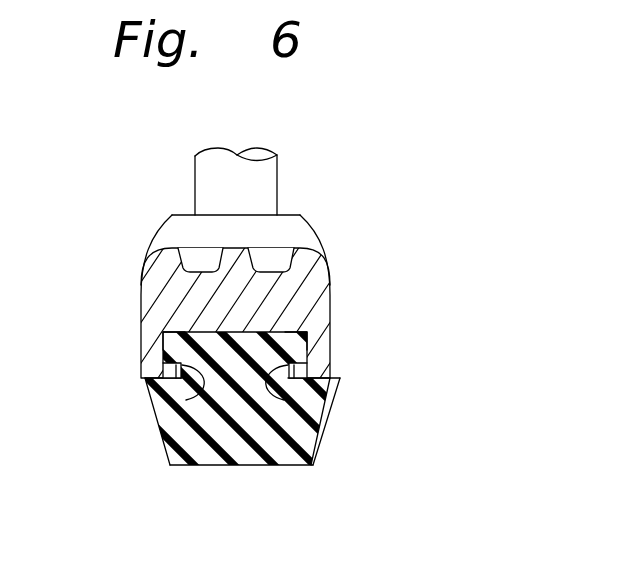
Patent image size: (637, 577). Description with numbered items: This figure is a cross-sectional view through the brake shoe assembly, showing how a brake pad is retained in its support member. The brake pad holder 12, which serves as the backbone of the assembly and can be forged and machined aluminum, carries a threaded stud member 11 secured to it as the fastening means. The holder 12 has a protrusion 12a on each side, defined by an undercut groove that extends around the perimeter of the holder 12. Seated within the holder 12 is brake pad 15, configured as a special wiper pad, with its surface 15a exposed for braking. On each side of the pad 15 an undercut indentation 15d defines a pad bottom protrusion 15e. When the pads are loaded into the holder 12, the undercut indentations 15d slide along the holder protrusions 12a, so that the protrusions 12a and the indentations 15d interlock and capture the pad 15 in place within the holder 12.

The threaded stud member 11 is at (273, 175).
The brake pad holder 12 is at (310, 235).
The protrusion 12a is at (163, 376).
The brake pad 15 is at (225, 432).
The surface 15a is at (250, 465).
The undercut indentation 15d is at (185, 404).
The pad bottom protrusion 15e is at (173, 343).